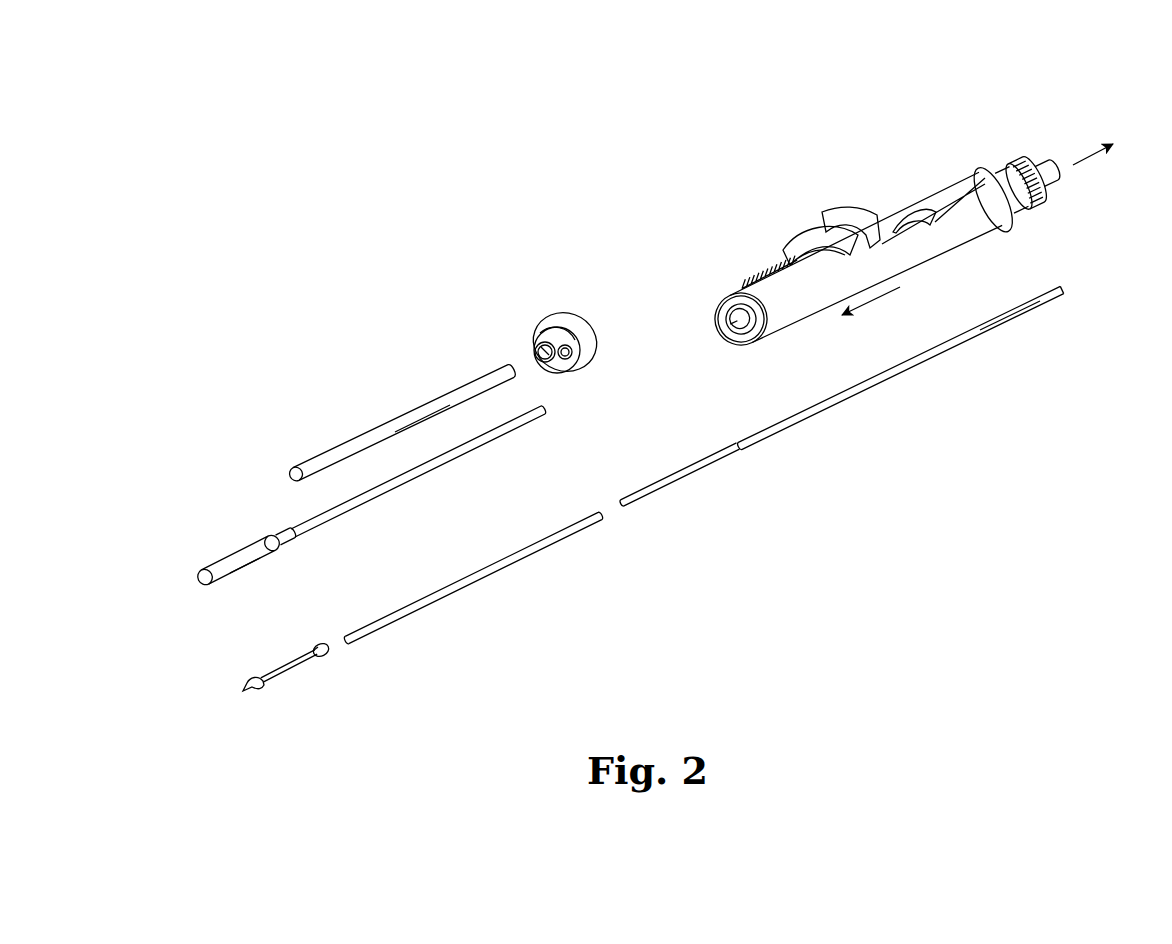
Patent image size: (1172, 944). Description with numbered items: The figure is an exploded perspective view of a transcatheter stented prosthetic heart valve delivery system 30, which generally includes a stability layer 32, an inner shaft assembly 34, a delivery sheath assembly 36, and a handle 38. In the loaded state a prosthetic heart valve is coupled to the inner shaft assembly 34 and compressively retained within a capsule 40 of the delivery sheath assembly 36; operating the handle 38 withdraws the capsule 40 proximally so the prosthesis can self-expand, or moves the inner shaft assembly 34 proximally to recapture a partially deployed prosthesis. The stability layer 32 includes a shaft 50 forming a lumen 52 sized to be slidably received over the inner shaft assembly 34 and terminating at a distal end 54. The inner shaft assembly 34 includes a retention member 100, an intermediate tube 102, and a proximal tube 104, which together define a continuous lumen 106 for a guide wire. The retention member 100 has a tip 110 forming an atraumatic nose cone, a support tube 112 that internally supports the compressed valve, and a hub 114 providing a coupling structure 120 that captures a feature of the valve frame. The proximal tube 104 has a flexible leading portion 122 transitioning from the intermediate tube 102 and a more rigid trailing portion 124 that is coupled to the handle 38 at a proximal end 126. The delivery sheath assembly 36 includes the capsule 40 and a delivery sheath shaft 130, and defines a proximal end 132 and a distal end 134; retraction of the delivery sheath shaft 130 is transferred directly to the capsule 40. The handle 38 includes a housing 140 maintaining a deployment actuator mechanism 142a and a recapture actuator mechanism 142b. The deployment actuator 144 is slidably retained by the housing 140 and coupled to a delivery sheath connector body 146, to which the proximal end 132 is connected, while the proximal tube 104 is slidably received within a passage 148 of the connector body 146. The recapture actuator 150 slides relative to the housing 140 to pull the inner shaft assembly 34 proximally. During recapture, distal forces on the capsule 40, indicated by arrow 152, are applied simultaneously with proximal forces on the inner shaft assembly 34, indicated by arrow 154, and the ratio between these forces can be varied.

The delivery system 30 is at (276, 172).
The stability layer 32 is at (372, 417).
The inner shaft assembly 34 is at (632, 587).
The delivery sheath assembly 36 is at (232, 535).
The handle 38 is at (916, 180).
The capsule 40 is at (254, 573).
The shaft 50 is at (421, 397).
The lumen 52 is at (289, 478).
The distal end 54 is at (298, 482).
The retention member 100 is at (313, 687).
The intermediate tube 102 is at (447, 604).
The proximal tube 104 is at (871, 399).
The lumen 106 is at (346, 646).
The tip 110 is at (246, 702).
The support tube 112 is at (281, 686).
The hub 114 is at (309, 650).
The coupling structure 120 is at (322, 643).
The leading portion 122 is at (696, 486).
The trailing portion 124 is at (1018, 327).
The proximal end 126 is at (1062, 290).
The delivery sheath shaft 130 is at (374, 507).
The proximal end 132 is at (549, 413).
The distal end 134 is at (206, 583).
The housing 140 is at (770, 262).
The deployment actuator mechanism 142a is at (862, 180).
The recapture actuator mechanism 142b is at (1046, 162).
The deployment actuator 144 is at (831, 205).
The delivery sheath connector body 146 is at (745, 348).
The passage 148 is at (735, 314).
The recapture actuator 150 is at (1016, 160).
The arrow 152 is at (878, 300).
The arrow 154 is at (1085, 158).